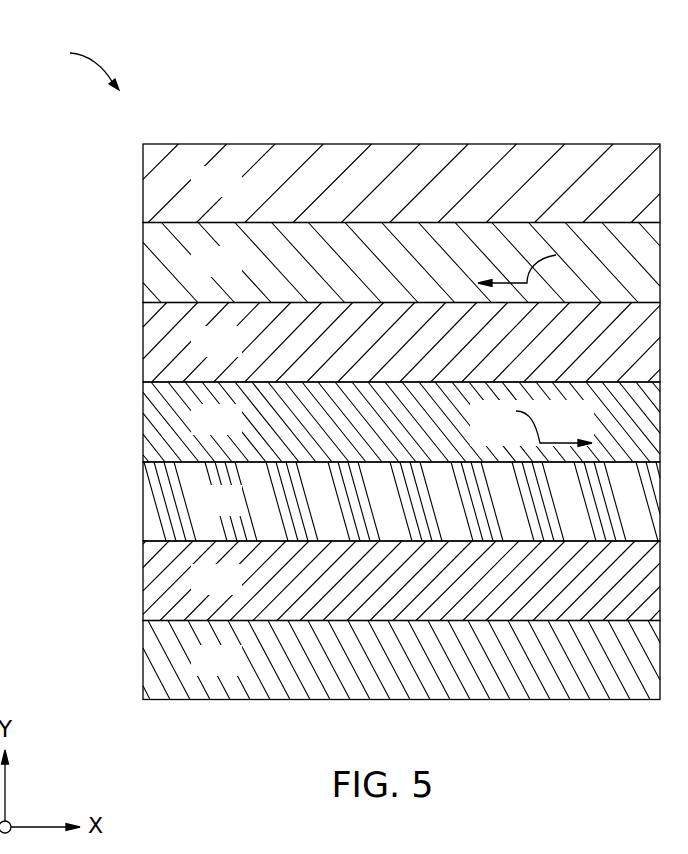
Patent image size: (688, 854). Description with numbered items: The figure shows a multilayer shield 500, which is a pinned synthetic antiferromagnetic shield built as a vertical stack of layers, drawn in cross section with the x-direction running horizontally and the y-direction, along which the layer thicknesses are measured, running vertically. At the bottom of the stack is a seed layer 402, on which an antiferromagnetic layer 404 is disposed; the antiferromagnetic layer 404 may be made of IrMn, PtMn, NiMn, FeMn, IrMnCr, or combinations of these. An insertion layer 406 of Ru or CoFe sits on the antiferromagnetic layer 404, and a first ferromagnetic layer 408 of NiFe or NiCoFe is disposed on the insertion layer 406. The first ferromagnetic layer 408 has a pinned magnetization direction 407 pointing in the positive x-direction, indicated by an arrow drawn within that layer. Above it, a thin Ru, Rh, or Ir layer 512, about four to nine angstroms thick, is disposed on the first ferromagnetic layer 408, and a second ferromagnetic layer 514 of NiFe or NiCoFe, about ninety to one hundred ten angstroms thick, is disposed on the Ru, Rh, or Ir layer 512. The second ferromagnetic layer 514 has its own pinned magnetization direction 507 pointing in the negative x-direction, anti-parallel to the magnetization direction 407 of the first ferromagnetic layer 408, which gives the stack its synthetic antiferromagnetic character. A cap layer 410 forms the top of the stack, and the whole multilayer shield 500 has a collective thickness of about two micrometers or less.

The multilayer shield 500 is at (69, 63).
The cap layer 410 is at (238, 194).
The second ferromagnetic layer 514 is at (238, 274).
The pinned magnetization direction 507 is at (539, 263).
The Ru, Rh, or Ir layer 512 is at (238, 354).
The first ferromagnetic layer 408 is at (238, 432).
The pinned magnetization direction 407 is at (532, 422).
The insertion layer 406 is at (238, 512).
The antiferromagnetic layer 404 is at (238, 592).
The seed layer 402 is at (238, 672).